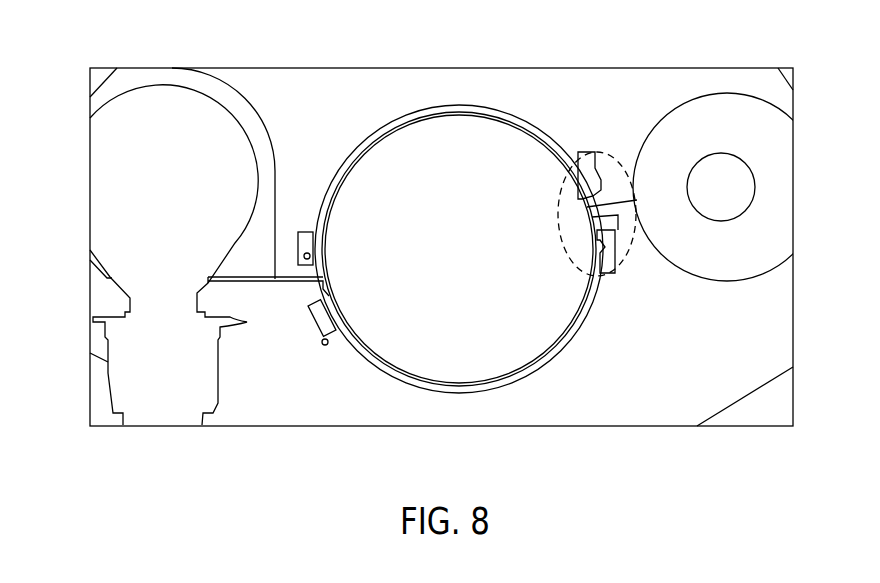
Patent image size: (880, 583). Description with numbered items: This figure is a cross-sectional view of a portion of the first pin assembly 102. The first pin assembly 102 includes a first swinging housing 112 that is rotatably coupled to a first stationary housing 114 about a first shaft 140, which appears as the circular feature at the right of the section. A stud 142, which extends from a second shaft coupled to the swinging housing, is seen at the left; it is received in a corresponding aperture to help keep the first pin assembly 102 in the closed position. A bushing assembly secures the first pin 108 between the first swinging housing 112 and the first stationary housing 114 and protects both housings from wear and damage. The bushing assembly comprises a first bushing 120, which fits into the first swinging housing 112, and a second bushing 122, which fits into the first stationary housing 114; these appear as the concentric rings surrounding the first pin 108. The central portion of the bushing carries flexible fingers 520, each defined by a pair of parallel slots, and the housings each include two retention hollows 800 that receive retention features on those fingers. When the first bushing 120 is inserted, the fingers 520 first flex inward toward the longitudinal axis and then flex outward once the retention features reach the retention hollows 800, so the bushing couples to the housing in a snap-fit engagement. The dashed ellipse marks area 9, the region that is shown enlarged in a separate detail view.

The first pin assembly 102 is at (538, 50).
The first swinging housing 112 is at (383, 93).
The finger 520 is at (313, 100).
The stud 142 is at (123, 380).
The first stationary housing 114 is at (270, 412).
The first bushing 120 is at (447, 108).
The second bushing 122 is at (483, 387).
The first pin 108 is at (421, 362).
The retention hollow 800 is at (306, 228).
The area 9 is at (618, 160).
The first shaft 140 is at (723, 182).